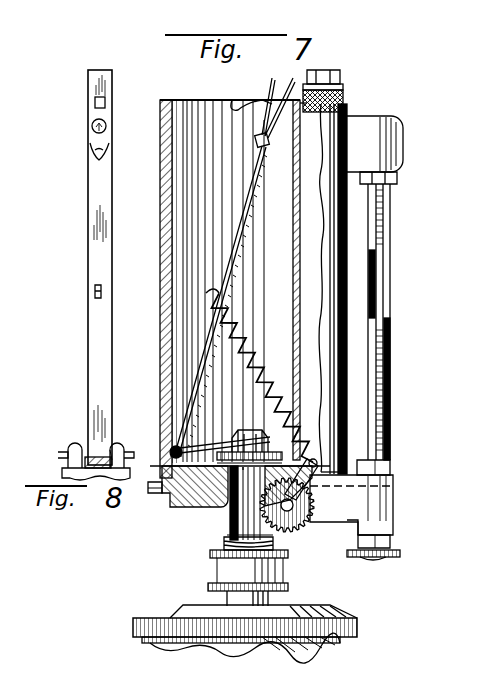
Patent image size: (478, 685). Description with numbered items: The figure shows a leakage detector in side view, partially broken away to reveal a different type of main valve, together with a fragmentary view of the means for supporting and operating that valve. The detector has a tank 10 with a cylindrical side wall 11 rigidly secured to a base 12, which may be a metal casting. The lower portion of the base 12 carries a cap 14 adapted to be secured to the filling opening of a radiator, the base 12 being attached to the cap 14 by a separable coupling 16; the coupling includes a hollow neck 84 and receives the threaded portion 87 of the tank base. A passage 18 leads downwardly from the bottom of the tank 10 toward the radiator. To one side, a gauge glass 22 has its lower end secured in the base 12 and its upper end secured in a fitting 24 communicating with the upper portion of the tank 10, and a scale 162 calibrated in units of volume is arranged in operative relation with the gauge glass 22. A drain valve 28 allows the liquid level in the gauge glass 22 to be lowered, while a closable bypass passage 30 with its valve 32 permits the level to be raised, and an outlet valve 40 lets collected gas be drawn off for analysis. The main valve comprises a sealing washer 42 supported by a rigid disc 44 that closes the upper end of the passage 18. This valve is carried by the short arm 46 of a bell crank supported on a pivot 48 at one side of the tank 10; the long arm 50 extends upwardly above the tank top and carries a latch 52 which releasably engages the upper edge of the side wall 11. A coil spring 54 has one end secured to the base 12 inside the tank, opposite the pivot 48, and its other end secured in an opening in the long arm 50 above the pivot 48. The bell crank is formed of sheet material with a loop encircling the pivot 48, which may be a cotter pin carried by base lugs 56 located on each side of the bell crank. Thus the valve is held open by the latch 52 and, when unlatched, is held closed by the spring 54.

In FIG. 7, the tank 10 is at (180, 98).
In FIG. 7, the side wall 11 is at (160, 147).
In FIG. 7, the base 12 is at (158, 489).
In FIG. 8, the base 12 is at (62, 473).
In FIG. 7, the cap 14 is at (336, 616).
In FIG. 7, the separable coupling 16 is at (290, 570).
In FIG. 7, the passage 18 is at (236, 540).
In FIG. 7, the gauge glass 22 is at (391, 276).
In FIG. 7, the fitting 24 is at (396, 118).
In FIG. 7, the drain valve 28 is at (400, 552).
In FIG. 7, the bypass passage 30 is at (396, 476).
In FIG. 7, the valve 32 is at (294, 505).
In FIG. 7, the outlet valve 40 is at (340, 75).
In FIG. 7, the sealing washer 42 is at (239, 503).
In FIG. 7, the rigid disc 44 is at (262, 440).
In FIG. 7, the short arm 46 is at (228, 465).
In FIG. 7, the pivot 48 is at (218, 468).
In FIG. 8, the pivot 48 is at (118, 450).
In FIG. 7, the long arm 50 is at (248, 212).
In FIG. 8, the long arm 50 is at (94, 190).
In FIG. 7, the latch 52 is at (236, 100).
In FIG. 8, the latch 52 is at (94, 101).
In FIG. 7, the coil spring 54 is at (257, 300).
In FIG. 8, the coil spring 54 is at (94, 292).
In FIG. 7, the base lugs 56 is at (200, 466).
In FIG. 8, the base lugs 56 is at (78, 446).
In FIG. 7, the hollow neck 84 is at (228, 600).
In FIG. 7, the threaded portion 87 is at (275, 542).
In FIG. 7, the scale 162 is at (391, 352).